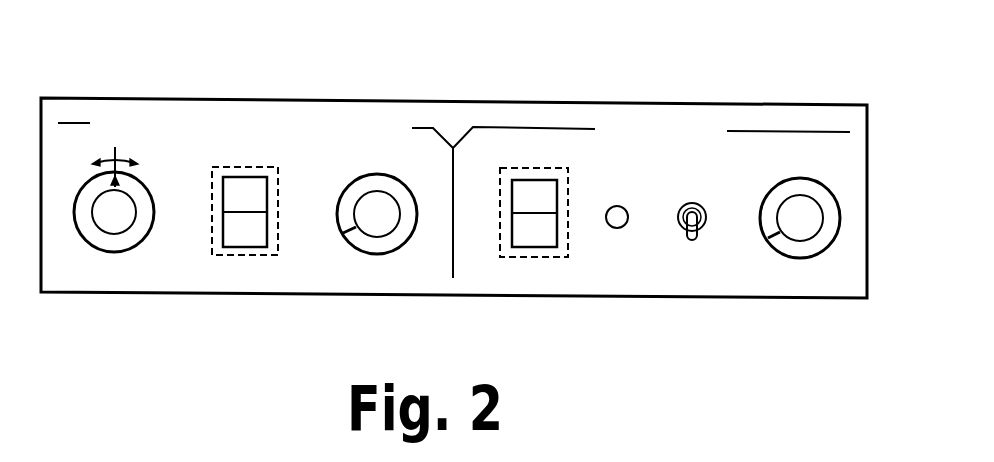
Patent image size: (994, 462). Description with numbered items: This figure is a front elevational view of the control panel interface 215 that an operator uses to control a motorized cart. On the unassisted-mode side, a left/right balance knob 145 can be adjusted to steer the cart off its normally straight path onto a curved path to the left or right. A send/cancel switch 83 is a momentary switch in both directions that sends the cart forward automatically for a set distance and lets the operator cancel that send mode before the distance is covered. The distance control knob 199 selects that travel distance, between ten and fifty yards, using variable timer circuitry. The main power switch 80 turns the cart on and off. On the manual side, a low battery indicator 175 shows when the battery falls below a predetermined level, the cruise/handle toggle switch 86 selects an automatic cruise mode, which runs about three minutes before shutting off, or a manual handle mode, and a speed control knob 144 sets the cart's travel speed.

The control panel interface 215 is at (607, 54).
The left/right balance knob 145 is at (80, 230).
The send/cancel switch 83 is at (212, 248).
The distance control knob 199 is at (353, 248).
The main power switch 80 is at (498, 257).
The low battery indicator 175 is at (605, 222).
The cruise/handle toggle switch 86 is at (680, 223).
The speed control knob 144 is at (777, 238).